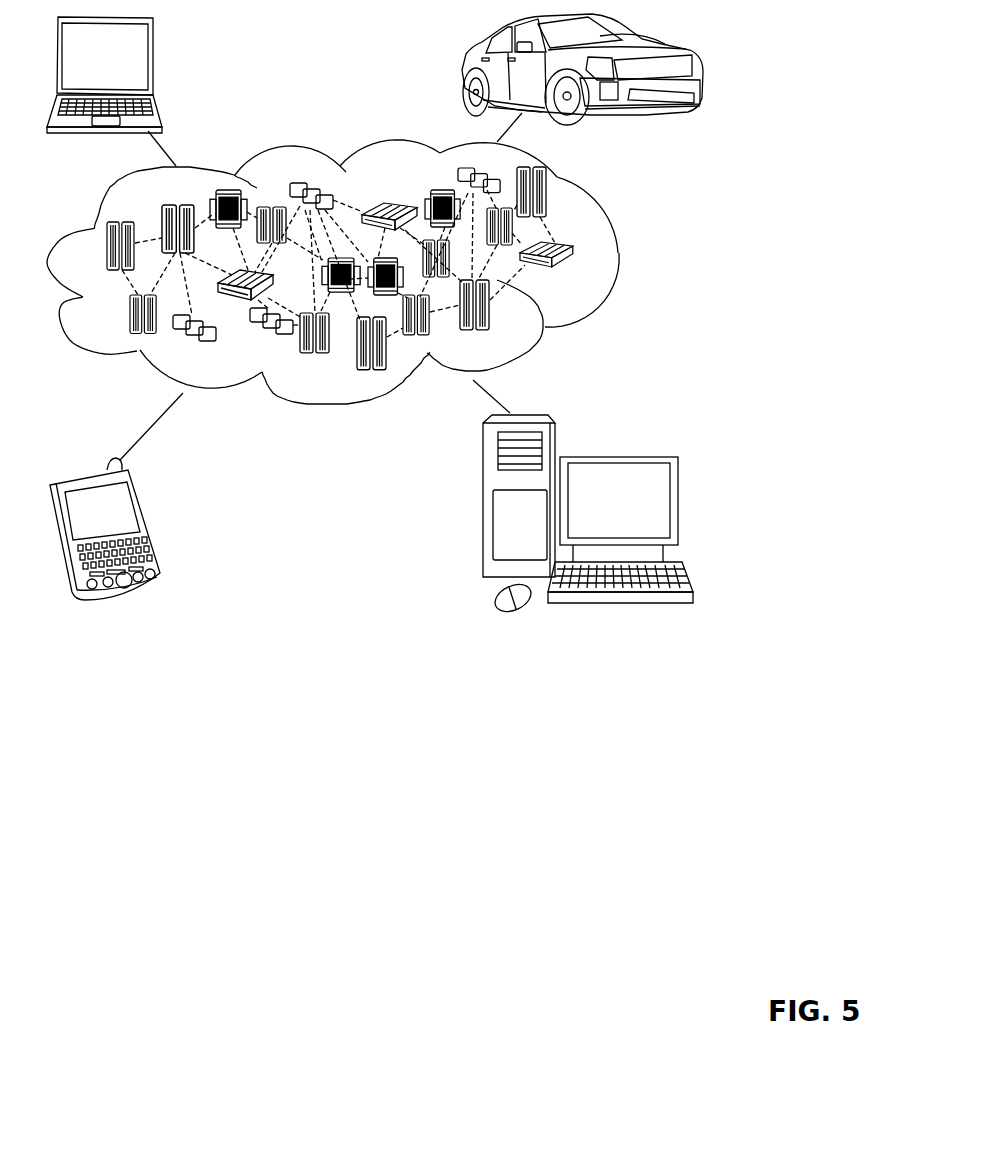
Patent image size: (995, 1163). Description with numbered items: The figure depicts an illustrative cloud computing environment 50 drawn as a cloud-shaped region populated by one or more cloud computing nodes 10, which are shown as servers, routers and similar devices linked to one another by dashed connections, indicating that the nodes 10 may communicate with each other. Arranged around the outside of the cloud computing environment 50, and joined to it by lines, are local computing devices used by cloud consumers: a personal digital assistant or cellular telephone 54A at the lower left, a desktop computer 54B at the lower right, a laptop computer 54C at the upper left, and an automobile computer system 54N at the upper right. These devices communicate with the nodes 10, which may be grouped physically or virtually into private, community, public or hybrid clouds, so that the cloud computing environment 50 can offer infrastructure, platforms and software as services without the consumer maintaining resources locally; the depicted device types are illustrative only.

The cloud computing nodes 10 is at (585, 280).
The cloud computing environment 50 is at (621, 253).
The personal digital assistant or cellular telephone 54A is at (151, 520).
The desktop computer 54B is at (618, 457).
The laptop computer 54C is at (155, 60).
The automobile computer system 54N is at (462, 70).